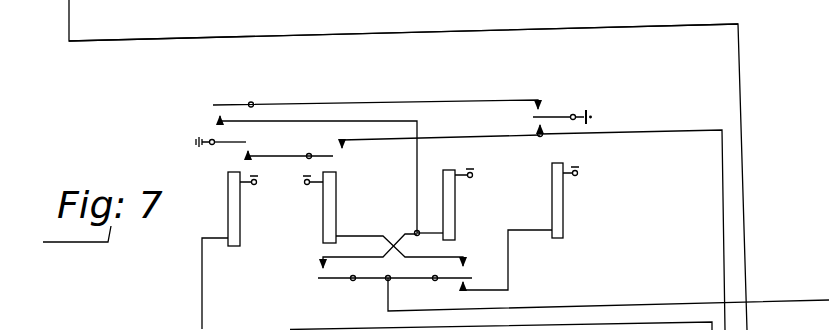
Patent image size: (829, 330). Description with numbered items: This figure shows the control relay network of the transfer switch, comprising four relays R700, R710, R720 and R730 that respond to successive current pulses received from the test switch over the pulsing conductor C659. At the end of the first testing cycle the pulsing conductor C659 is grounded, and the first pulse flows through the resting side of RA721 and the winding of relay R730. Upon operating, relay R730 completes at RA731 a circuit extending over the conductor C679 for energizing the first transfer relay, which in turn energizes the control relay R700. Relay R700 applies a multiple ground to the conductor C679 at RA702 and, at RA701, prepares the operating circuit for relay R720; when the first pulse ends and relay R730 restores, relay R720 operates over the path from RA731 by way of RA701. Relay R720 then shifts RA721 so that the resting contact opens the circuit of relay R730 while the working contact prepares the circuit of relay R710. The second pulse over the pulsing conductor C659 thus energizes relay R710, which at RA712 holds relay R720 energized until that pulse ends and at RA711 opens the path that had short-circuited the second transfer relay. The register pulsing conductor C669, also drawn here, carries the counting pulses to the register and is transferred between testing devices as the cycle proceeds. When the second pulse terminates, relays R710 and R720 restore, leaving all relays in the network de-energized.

The register pulsing conductor C669 is at (71, 23).
The contact of relay R700 RA701 is at (242, 104).
The contact of relay R700 RA702 is at (246, 142).
The contact of relay R710 RA711 is at (333, 156).
The contact of relay R730 RA731 is at (561, 102).
The conductor C679 is at (691, 131).
The control relay R700 is at (240, 236).
The control relay R710 is at (336, 235).
The control relay R720 is at (455, 231).
The control relay R730 is at (563, 230).
The contact of relay R710 RA712 is at (345, 280).
The contact of relay R720 RA721 is at (449, 280).
The pulsing conductor C659 is at (697, 304).